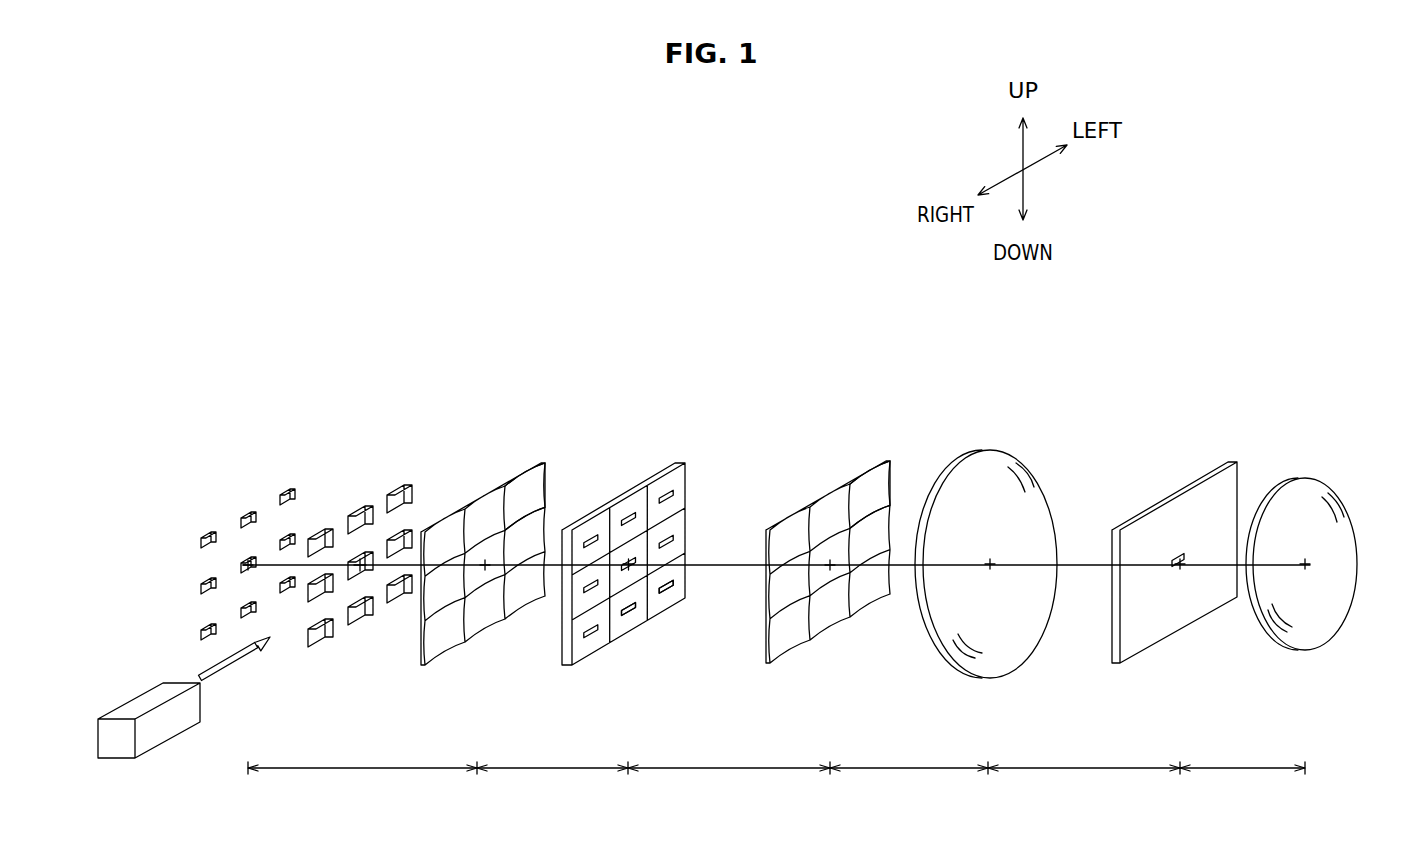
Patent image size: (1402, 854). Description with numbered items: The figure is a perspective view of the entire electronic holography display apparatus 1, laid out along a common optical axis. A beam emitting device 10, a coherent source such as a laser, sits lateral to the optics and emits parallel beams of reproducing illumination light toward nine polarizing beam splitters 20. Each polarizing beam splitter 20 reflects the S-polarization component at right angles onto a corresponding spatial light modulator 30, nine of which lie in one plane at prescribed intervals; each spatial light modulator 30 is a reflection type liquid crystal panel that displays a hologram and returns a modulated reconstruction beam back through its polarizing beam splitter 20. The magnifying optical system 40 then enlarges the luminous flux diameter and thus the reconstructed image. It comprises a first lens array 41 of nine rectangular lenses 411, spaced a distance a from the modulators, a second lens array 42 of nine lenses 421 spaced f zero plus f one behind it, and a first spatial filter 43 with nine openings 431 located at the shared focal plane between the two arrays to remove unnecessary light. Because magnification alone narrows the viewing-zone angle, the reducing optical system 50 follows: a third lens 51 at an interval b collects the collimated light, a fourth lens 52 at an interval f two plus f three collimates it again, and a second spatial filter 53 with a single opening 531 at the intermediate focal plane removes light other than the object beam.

The electronic holography display apparatus 1 is at (566, 199).
The beam emitting device 10 is at (148, 740).
The polarizing beam splitter 20 is at (307, 362).
The spatial light modulator 30 is at (193, 362).
The magnifying optical system 40 is at (880, 362).
The first lens array 41 is at (499, 469).
The lens 411 is at (530, 490).
The second lens array 42 is at (842, 471).
The lens 421 is at (880, 488).
The first spatial filter 43 is at (705, 469).
The opening 431 is at (668, 586).
The reducing optical system 50 is at (1348, 362).
The third lens 51 is at (977, 462).
The fourth lens 52 is at (1290, 487).
The second spatial filter 53 is at (1177, 474).
The opening 531 is at (1187, 563).